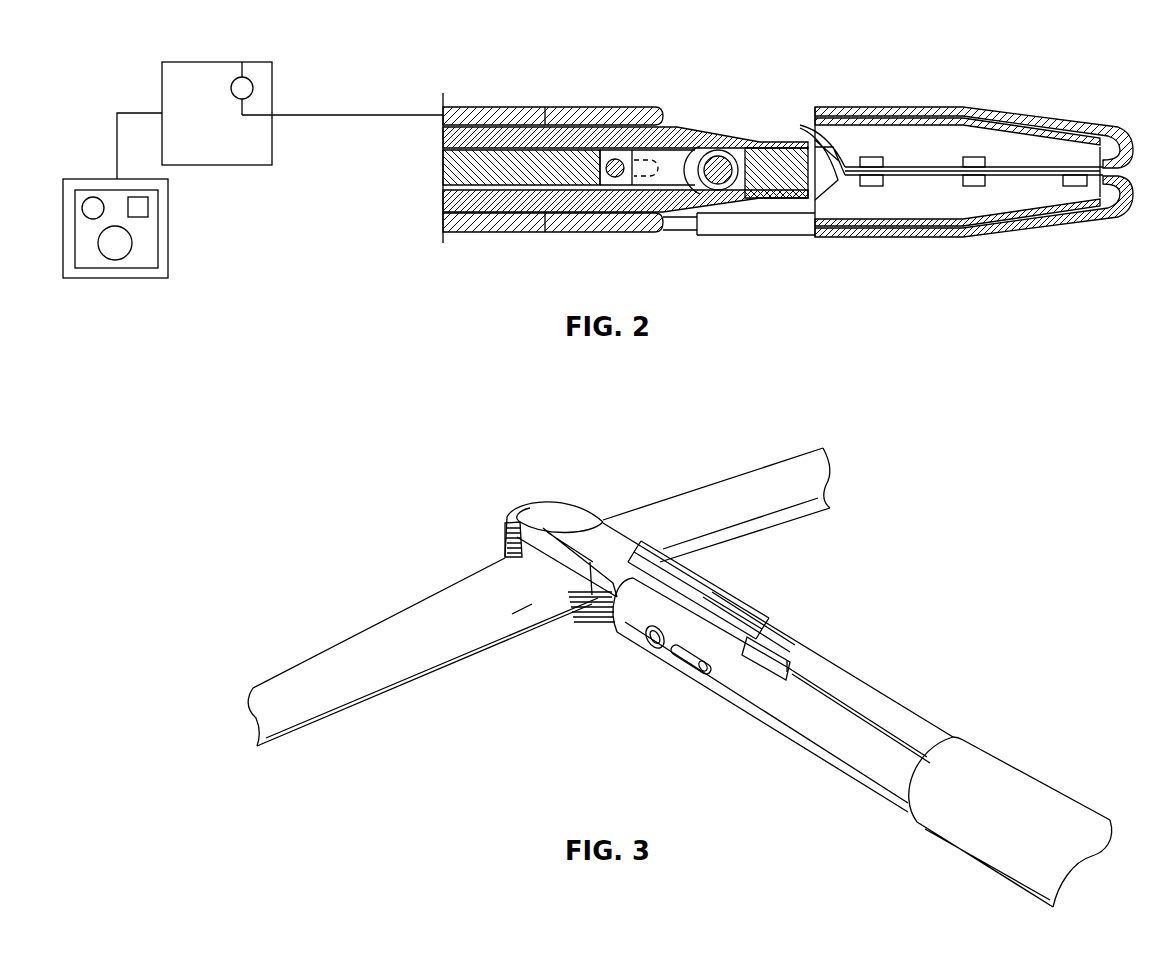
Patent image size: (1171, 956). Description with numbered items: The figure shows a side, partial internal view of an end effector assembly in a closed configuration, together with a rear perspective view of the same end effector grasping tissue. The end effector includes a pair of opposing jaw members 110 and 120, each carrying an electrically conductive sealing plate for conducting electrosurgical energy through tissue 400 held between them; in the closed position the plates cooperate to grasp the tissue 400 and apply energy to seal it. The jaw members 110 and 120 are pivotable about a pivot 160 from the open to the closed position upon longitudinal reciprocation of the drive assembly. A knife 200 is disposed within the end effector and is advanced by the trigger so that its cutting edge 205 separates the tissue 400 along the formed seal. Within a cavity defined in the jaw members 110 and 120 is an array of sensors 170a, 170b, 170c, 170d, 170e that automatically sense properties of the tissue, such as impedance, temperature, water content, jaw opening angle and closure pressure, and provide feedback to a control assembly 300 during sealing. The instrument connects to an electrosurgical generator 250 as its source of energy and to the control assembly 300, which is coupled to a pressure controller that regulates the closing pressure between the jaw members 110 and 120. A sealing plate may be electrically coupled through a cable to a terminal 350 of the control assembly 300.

In FIG. 2, the jaw member 110 is at (1038, 88).
In FIG. 3, the jaw member 110 is at (578, 495).
In FIG. 2, the jaw member 120 is at (1008, 297).
In FIG. 3, the jaw member 120 is at (588, 645).
In FIG. 2, the pivot 160 is at (722, 150).
In FIG. 2, the sensor 170a is at (868, 157).
In FIG. 2, the sensor 170b is at (975, 157).
In FIG. 2, the sensor 170c is at (1072, 187).
In FIG. 2, the sensor 170d is at (968, 187).
In FIG. 2, the sensor 170e is at (866, 187).
In FIG. 2, the knife 200 is at (778, 198).
In FIG. 2, the cutting edge 205 is at (833, 157).
In FIG. 2, the electrosurgical generator 250 is at (117, 280).
In FIG. 2, the control assembly 300 is at (262, 167).
In FIG. 2, the terminal 350 is at (243, 62).
In FIG. 3, the tissue 400 is at (776, 478).